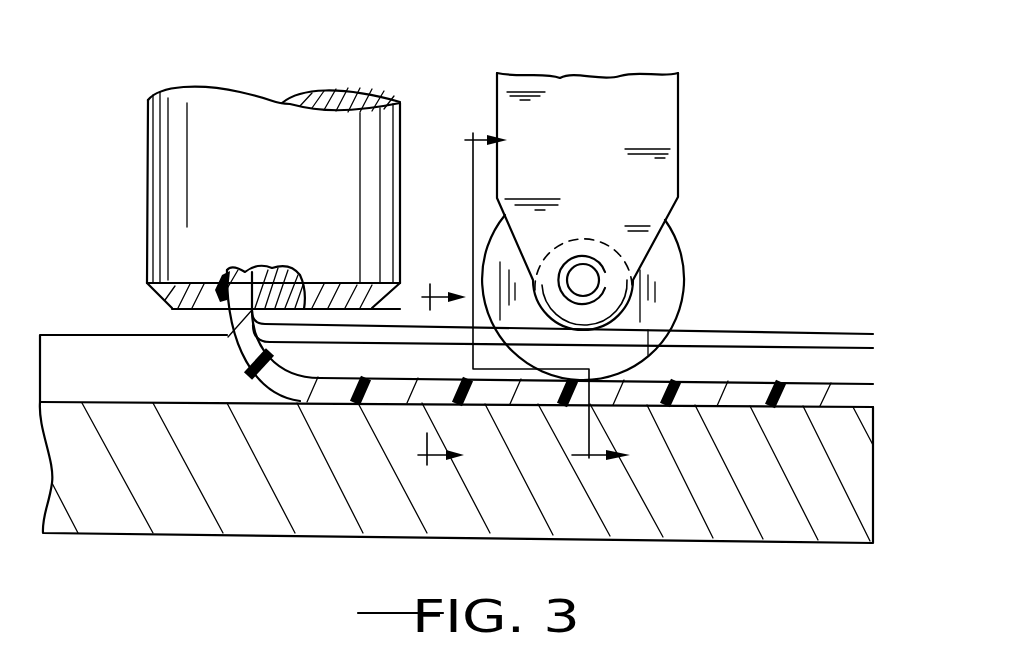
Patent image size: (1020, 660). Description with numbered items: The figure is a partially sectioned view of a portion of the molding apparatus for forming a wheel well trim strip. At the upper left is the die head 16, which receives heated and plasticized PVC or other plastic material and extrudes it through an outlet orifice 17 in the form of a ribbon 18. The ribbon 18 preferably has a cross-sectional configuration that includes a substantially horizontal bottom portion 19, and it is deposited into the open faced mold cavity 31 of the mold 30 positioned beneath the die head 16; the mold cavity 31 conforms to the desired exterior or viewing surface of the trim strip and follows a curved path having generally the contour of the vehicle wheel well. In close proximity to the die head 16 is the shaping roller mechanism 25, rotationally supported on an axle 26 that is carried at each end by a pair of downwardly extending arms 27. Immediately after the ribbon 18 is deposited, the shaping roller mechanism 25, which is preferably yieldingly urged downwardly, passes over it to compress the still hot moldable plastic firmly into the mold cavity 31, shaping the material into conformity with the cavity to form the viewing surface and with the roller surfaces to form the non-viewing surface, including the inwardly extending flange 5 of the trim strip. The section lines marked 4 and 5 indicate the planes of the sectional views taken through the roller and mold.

The die head 16 is at (290, 200).
The outlet orifice 17 is at (220, 316).
The ribbon 18 is at (250, 350).
The substantially horizontal bottom portion 19 is at (331, 387).
The shaping roller mechanism 25 is at (702, 255).
The axle 26 is at (583, 275).
The downwardly extending arms 27 is at (620, 138).
The mold 30 is at (687, 528).
The mold cavity 31 is at (130, 384).
The section line 4- 4 is at (442, 380).
The flange 5 is at (559, 297).